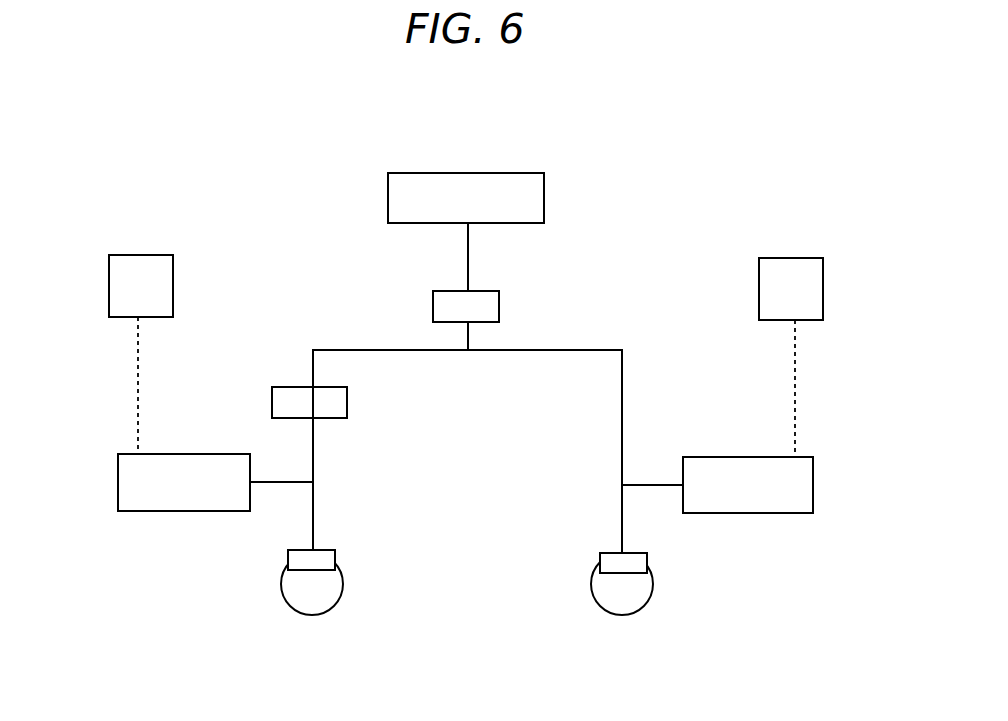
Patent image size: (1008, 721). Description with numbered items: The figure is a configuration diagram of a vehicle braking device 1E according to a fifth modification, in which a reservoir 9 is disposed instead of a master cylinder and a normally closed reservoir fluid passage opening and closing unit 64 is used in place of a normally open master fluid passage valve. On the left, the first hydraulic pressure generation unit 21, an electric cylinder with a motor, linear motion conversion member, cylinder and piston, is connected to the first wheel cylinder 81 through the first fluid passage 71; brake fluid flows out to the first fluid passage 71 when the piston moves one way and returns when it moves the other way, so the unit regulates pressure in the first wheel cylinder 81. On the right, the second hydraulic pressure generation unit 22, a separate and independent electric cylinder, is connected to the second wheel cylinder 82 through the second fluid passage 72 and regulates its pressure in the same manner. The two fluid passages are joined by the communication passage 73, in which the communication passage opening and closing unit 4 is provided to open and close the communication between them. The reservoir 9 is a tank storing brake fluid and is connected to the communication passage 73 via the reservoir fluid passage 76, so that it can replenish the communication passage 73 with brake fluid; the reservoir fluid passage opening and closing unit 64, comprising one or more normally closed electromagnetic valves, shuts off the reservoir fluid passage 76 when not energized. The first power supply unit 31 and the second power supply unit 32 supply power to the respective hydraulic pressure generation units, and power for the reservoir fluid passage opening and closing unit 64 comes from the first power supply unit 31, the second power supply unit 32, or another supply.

The vehicle braking device 1E is at (136, 96).
The reservoir 9 is at (469, 183).
The reservoir fluid passage 76 is at (470, 263).
The reservoir fluid passage opening and closing unit 64 is at (485, 312).
The communication passage 73 is at (382, 352).
The first fluid passage 71 is at (310, 510).
The second fluid passage 72 is at (625, 517).
The communication passage opening and closing unit 4 is at (343, 415).
The first power supply unit 31 is at (122, 262).
The second power supply unit 32 is at (807, 275).
The first hydraulic pressure generation unit 21 is at (173, 503).
The second hydraulic pressure generation unit 22 is at (735, 500).
The first wheel cylinder 81 is at (322, 560).
The second wheel cylinder 82 is at (612, 562).